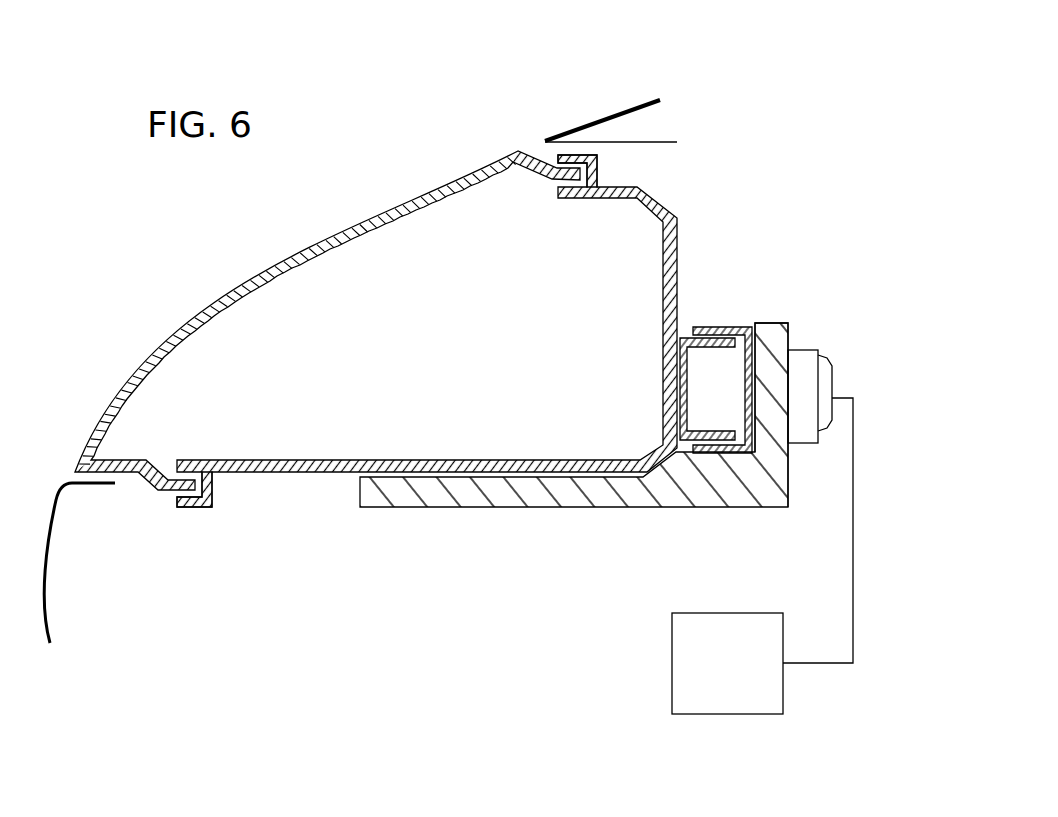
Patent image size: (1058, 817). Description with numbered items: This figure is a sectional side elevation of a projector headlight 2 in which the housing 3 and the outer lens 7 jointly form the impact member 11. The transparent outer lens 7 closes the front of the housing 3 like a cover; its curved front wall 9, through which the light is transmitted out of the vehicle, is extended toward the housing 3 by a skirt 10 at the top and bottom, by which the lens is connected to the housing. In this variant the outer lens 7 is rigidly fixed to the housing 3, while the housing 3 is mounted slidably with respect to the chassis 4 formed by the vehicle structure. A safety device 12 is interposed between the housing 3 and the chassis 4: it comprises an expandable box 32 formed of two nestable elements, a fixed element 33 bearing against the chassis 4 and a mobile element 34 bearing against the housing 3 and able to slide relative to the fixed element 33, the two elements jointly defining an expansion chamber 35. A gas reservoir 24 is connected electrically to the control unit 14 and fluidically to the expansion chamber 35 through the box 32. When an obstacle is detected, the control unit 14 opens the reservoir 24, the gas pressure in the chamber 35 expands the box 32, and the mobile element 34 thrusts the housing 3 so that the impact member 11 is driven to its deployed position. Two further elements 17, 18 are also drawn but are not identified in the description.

The headlight 2 is at (297, 570).
The housing 3 is at (663, 250).
The chassis 4 is at (490, 507).
The outer lens 7 is at (438, 200).
The front wall 9 is at (173, 343).
The skirt 10 is at (533, 150).
The impact member 11 is at (540, 273).
The safety device 12 is at (697, 303).
The control unit 14 is at (714, 683).
The vehicle body panel 17 is at (47, 572).
The hood edge 18 is at (601, 118).
The gas reservoir 24 is at (805, 347).
The expandable box 32 is at (718, 323).
The fixed element 33 is at (745, 327).
The mobile element 34 is at (678, 336).
The expansion chamber 35 is at (702, 403).